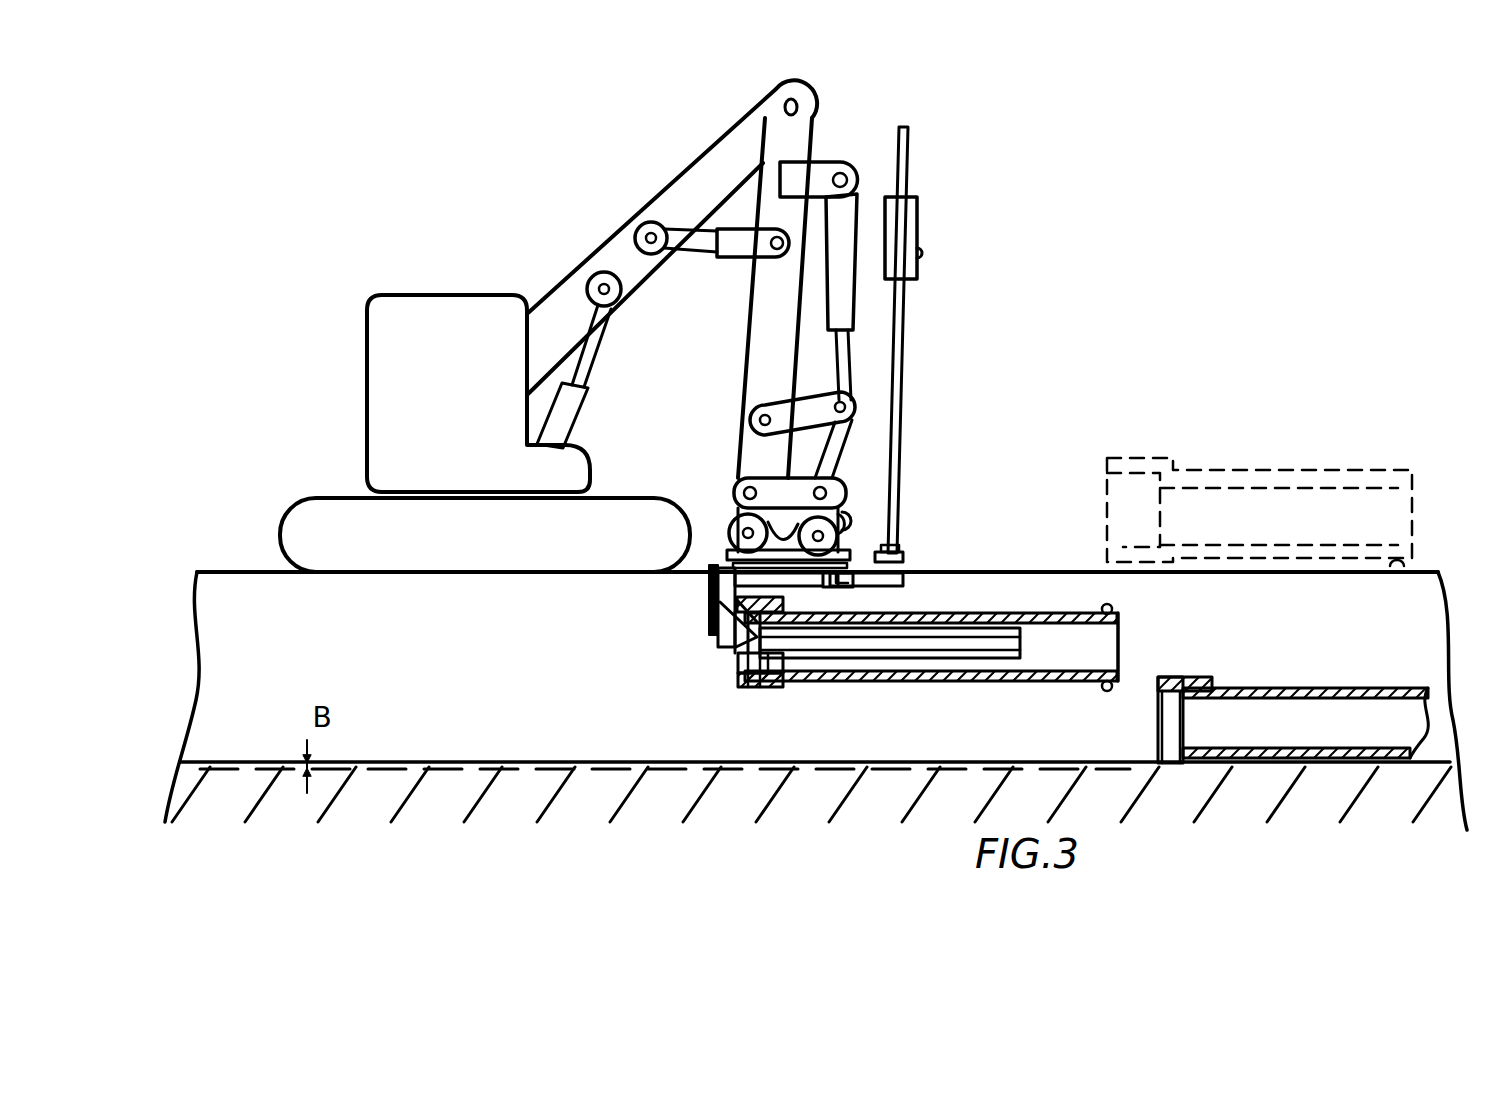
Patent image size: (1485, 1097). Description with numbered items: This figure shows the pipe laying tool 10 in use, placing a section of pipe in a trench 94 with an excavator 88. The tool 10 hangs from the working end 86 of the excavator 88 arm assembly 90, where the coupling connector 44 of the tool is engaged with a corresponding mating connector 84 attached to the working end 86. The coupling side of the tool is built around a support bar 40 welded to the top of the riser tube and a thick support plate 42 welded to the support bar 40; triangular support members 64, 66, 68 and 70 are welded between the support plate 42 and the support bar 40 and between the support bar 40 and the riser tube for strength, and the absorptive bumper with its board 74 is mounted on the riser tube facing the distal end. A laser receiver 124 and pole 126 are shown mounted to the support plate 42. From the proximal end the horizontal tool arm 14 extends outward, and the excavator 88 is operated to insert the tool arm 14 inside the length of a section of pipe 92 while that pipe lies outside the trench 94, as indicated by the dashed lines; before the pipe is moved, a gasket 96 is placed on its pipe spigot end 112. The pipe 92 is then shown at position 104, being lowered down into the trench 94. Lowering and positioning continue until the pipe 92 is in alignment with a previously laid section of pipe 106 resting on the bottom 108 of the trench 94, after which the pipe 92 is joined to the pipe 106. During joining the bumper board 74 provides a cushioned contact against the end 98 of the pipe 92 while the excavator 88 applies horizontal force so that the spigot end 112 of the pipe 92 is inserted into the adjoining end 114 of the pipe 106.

The pipe laying tool 10 is at (804, 652).
The horizontal tool arm 14 is at (968, 637).
The support bar 40 is at (905, 582).
The support plate 42 is at (908, 568).
The coupling connector 44 is at (724, 535).
The triangular support member 64 is at (708, 580).
The triangular support member 66 is at (722, 598).
The triangular support member 68 is at (780, 574).
The triangular support member 70 is at (833, 580).
The board 74 is at (708, 627).
The mating connector 84 is at (845, 504).
The working end 86 is at (730, 478).
The excavator 88 is at (627, 182).
The arm assembly 90 is at (730, 344).
The section of pipe 92 is at (1057, 617).
The trench 94 is at (816, 701).
The gasket 96 is at (1112, 610).
The end of pipe 98 is at (722, 683).
The position 104 is at (820, 692).
The previously laid section of pipe 106 is at (1307, 687).
The bottom of the trench 108 is at (462, 765).
The pipe spigot end 112 is at (1133, 620).
The adjoining end of pipe 114 is at (1143, 740).
The laser receiver 124 is at (917, 210).
The pole 126 is at (903, 318).